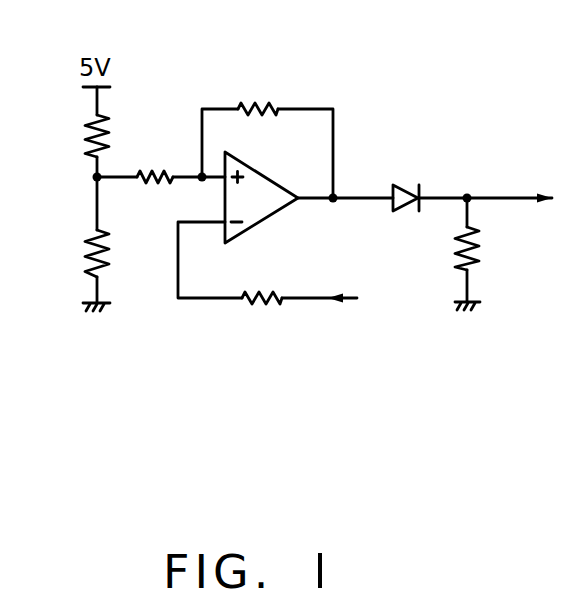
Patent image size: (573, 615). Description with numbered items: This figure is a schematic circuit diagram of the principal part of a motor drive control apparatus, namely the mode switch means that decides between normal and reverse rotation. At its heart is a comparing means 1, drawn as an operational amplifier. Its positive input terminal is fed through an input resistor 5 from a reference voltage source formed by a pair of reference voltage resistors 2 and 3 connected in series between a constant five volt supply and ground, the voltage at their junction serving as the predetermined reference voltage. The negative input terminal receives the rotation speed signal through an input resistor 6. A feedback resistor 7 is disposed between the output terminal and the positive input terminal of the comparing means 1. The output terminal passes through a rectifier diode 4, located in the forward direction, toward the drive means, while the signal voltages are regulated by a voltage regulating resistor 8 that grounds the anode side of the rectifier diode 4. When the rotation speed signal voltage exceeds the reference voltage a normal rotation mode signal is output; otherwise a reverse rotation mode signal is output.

The comparing means 1 is at (270, 213).
The reference voltage resistor 2 is at (85, 130).
The reference voltage resistor 3 is at (85, 248).
The rectifier diode 4 is at (408, 185).
The input resistor 5 is at (160, 157).
The input resistor 6 is at (257, 307).
The feedback resistor 7 is at (263, 95).
The voltage regulating resistor 8 is at (480, 247).